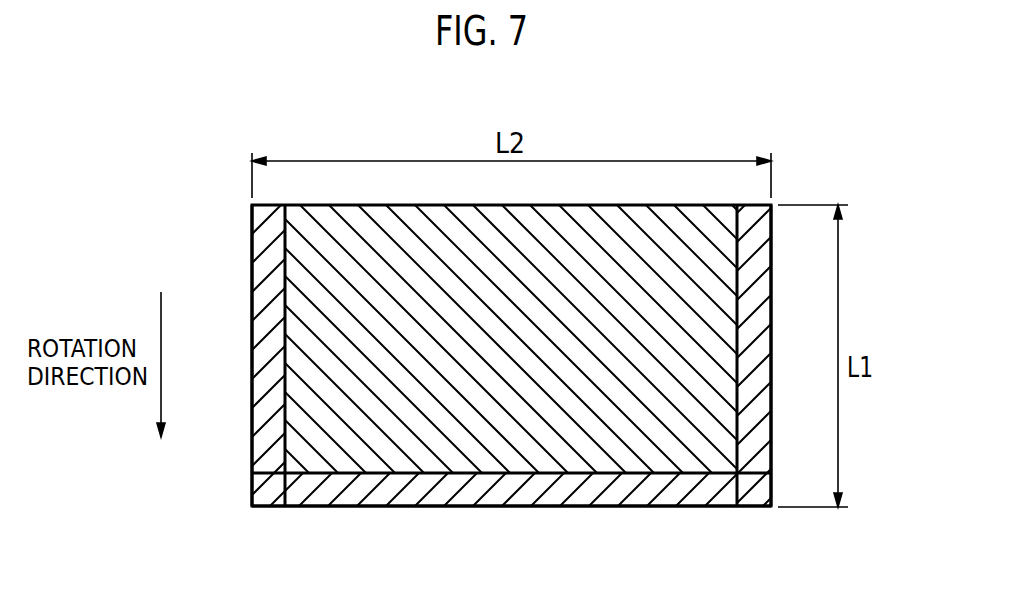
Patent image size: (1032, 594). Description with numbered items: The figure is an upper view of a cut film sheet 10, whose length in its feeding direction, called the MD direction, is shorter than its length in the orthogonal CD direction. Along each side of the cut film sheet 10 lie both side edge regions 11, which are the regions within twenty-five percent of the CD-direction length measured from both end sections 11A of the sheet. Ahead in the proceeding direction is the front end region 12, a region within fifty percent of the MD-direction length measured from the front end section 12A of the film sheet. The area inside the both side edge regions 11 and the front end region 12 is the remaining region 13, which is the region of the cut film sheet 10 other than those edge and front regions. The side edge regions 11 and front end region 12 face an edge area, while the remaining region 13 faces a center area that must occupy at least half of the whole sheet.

The cut film sheet 10 is at (800, 172).
The both side edge regions 11 is at (260, 368).
The both end sections 11A is at (252, 427).
The front end region 12 is at (497, 497).
The front end section 12A is at (605, 508).
The remaining region 13 is at (512, 212).